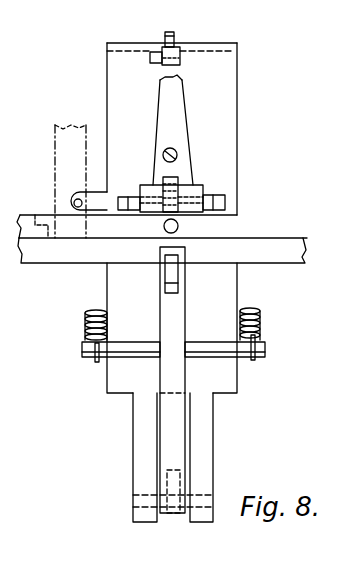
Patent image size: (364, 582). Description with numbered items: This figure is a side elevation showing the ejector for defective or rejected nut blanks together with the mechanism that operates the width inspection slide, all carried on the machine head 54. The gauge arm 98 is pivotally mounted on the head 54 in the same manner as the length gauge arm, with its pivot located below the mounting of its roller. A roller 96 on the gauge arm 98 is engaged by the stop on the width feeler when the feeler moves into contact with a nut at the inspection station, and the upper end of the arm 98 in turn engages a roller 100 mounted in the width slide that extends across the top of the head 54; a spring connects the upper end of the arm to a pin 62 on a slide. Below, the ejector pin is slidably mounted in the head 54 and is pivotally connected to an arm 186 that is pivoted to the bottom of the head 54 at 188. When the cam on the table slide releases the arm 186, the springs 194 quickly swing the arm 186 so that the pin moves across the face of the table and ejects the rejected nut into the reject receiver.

The machine head 54 is at (228, 87).
The pin 62 is at (175, 35).
The roller 100 is at (162, 64).
The gauge arm 98 is at (177, 142).
The roller 96 is at (177, 182).
The springs 194 is at (85, 322).
The arm 186 is at (167, 382).
The pivot 188 is at (185, 512).